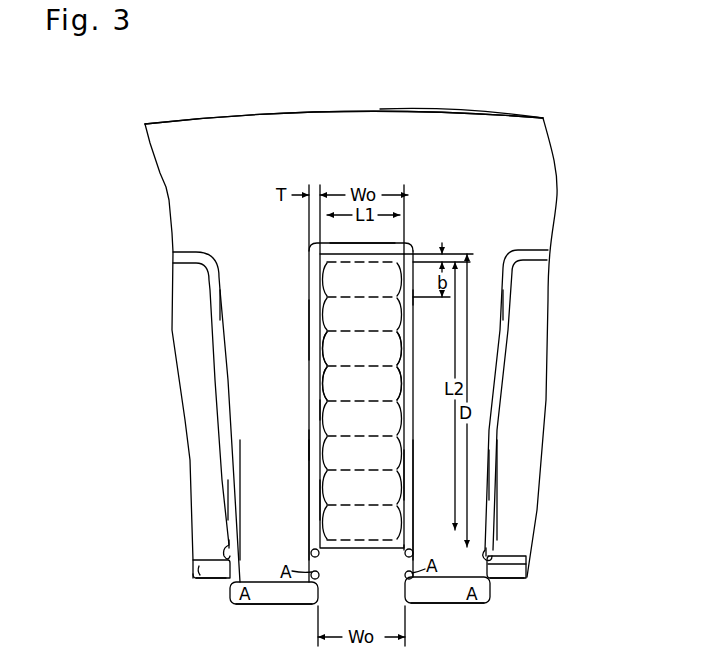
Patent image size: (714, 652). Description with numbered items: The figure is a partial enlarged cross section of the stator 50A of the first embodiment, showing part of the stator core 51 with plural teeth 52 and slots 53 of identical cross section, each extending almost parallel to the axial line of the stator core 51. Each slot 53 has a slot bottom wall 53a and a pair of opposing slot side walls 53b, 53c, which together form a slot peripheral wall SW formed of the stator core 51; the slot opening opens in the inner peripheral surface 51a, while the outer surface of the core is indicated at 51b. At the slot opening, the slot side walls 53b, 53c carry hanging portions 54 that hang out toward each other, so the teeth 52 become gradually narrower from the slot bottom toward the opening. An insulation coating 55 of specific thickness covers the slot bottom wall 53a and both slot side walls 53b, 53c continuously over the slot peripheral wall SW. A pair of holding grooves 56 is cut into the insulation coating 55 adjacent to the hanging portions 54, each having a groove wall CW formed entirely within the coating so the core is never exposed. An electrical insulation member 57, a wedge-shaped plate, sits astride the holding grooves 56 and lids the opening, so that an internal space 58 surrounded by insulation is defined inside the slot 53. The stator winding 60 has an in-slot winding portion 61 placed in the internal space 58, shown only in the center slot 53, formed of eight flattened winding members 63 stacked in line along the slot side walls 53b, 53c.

The stator 50A is at (466, 80).
The stator core 51 is at (349, 128).
The inner peripheral surface 51a is at (262, 606).
The yoke outer surface 51b is at (495, 113).
The teeth 52 is at (242, 430).
The slots 53 is at (208, 376).
The slot bottom wall 53a is at (352, 244).
The slot side wall 53b is at (309, 328).
The slot side wall 53c is at (418, 298).
The hanging portions 54 is at (231, 600).
The insulation coating 55 is at (226, 494).
The holding grooves 56 is at (228, 548).
The electrical insulation member 57 is at (200, 578).
The internal space 58 is at (315, 412).
The stator winding 60 is at (402, 432).
The in-slot winding portion 61 is at (402, 390).
The winding members 63 is at (400, 348).
The slot peripheral wall SW is at (220, 306).
The groove wall CW is at (412, 545).